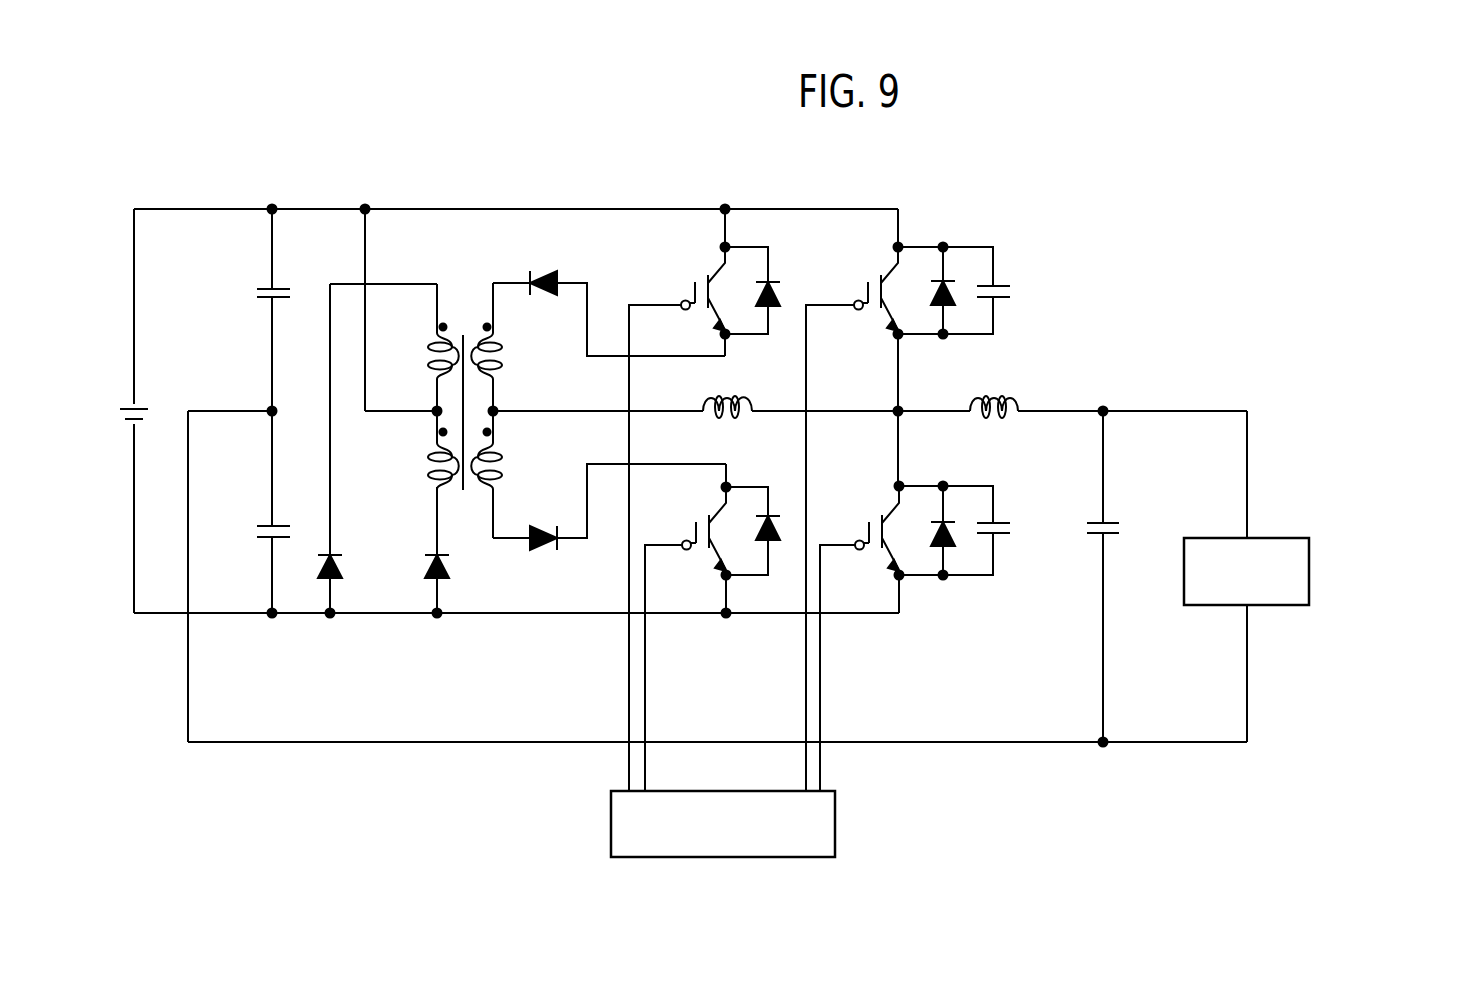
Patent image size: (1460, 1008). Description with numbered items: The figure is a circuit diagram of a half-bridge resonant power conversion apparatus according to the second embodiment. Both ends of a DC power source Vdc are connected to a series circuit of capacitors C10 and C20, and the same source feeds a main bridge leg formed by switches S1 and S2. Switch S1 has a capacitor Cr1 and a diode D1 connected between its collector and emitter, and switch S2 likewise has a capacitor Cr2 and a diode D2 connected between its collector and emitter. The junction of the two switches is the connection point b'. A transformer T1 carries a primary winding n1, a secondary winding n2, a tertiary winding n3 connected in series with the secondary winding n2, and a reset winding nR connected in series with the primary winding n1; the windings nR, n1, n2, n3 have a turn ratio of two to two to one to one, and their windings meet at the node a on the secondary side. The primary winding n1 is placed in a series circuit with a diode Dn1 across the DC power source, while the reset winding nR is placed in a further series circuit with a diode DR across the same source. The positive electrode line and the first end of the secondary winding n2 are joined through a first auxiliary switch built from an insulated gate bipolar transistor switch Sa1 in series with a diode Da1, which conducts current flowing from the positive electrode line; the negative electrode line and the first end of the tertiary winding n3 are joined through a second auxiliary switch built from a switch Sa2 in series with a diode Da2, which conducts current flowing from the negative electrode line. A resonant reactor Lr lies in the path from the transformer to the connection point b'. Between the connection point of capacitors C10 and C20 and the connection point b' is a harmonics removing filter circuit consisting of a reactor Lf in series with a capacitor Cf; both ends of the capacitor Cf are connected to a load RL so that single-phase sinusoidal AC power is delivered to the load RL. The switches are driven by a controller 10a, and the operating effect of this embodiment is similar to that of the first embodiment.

The controller 10a is at (836, 820).
The DC power source Vdc is at (112, 396).
The capacitor C10 is at (246, 310).
The capacitor C20 is at (247, 512).
The transformer T1 is at (460, 410).
The reset winding nR is at (421, 350).
The primary winding n1 is at (424, 450).
The secondary winding n2 is at (504, 347).
The tertiary winding n3 is at (504, 474).
The diode DR is at (377, 451).
The diode Dn1 is at (461, 552).
The diode Da1 is at (609, 295).
The diode Da2 is at (609, 529).
The switch Sa1 is at (704, 500).
The switch Sa2 is at (712, 627).
The switch S1 is at (854, 500).
The switch S2 is at (862, 637).
The diode D1 is at (926, 275).
The diode D2 is at (927, 554).
The capacitor Cr1 is at (994, 290).
The capacitor Cr2 is at (993, 537).
The resonant inductor Lr is at (740, 398).
The reactor Lf is at (1003, 398).
The capacitor Cf is at (1119, 576).
The load RL is at (1263, 538).
The node a is at (498, 409).
The connection point b' is at (930, 393).